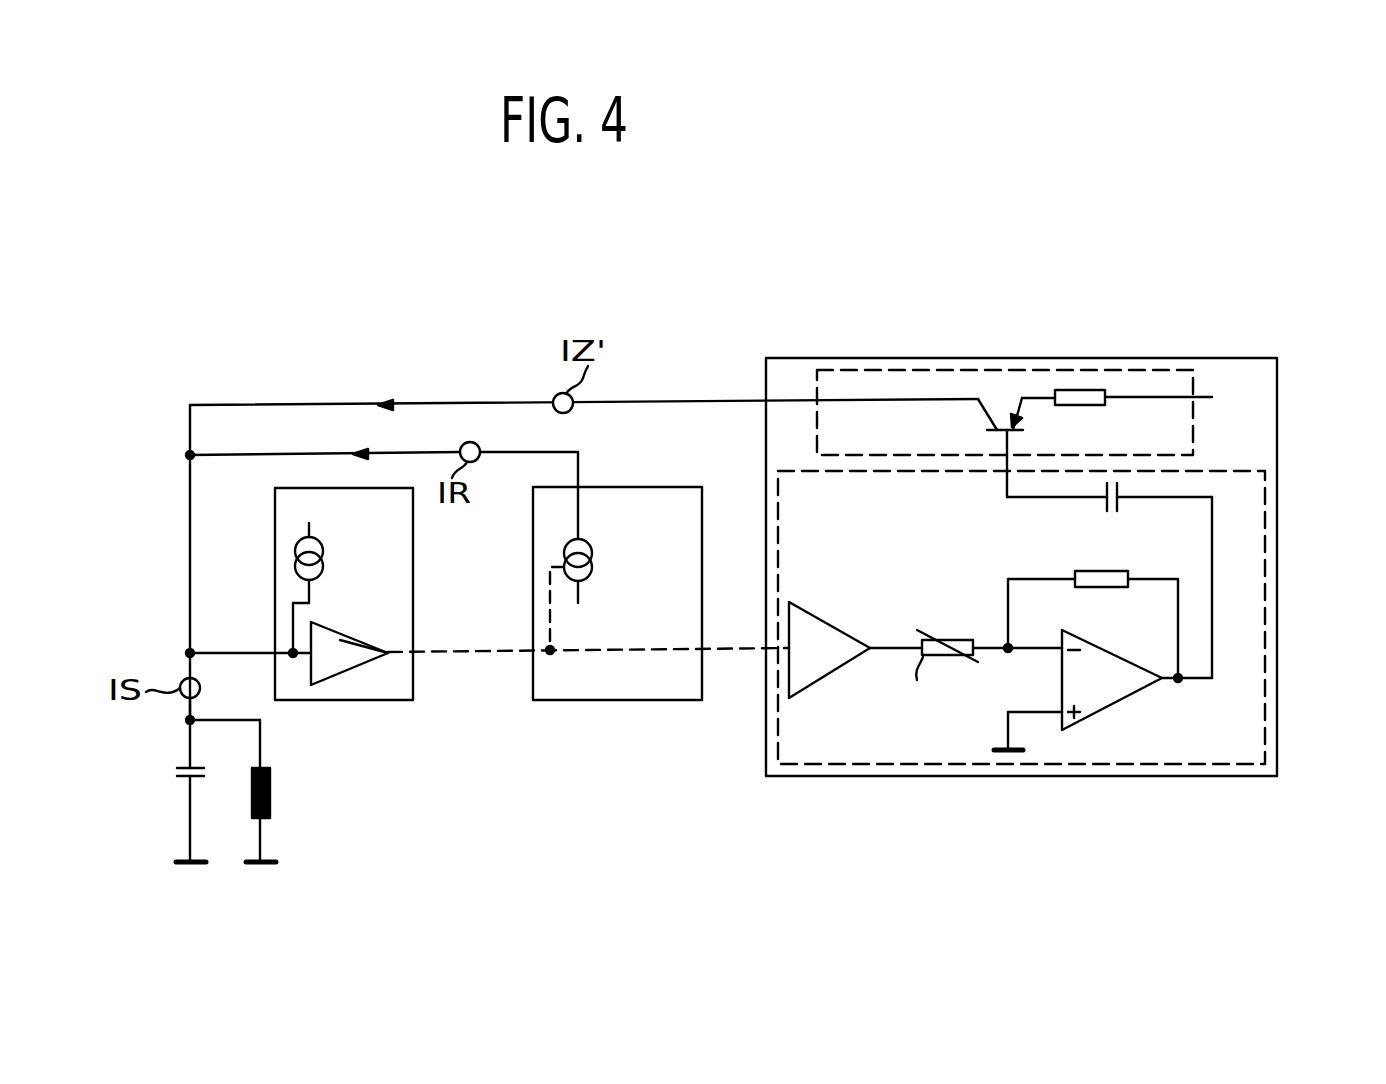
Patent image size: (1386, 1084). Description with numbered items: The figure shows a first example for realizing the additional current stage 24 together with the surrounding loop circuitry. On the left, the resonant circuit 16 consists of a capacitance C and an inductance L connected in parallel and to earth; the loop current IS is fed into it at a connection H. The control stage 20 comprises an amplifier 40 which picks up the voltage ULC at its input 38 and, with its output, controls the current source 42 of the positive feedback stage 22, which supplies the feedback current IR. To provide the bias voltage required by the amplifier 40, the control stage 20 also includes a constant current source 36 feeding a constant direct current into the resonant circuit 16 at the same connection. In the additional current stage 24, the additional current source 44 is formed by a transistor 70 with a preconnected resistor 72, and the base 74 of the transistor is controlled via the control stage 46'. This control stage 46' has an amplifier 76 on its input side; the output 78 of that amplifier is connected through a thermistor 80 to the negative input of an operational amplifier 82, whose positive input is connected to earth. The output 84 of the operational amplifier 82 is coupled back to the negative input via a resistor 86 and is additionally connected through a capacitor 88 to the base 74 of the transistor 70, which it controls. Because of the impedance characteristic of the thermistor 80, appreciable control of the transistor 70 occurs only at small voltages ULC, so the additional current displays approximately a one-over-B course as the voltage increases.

The resonant circuit 16 is at (168, 832).
The control stage 20 is at (413, 600).
The positive feedback stage 22 is at (700, 488).
The additional current stage 24 is at (883, 348).
The constant current source 36 is at (322, 552).
The input 38 is at (310, 656).
The amplifier 40 is at (353, 657).
The current source 42 is at (600, 553).
The additional current source 44 is at (940, 383).
The control stage 46' is at (1077, 617).
The transistor 70 is at (1009, 392).
The resistor 72 is at (1095, 395).
The base 74 is at (1000, 432).
The amplifier 76 is at (802, 685).
The output 78 is at (870, 648).
The thermistor 80 is at (957, 657).
The operational amplifier 82 is at (1117, 690).
The output 84 is at (1160, 677).
The resistor 86 is at (1120, 570).
The capacitor 88 is at (1105, 505).